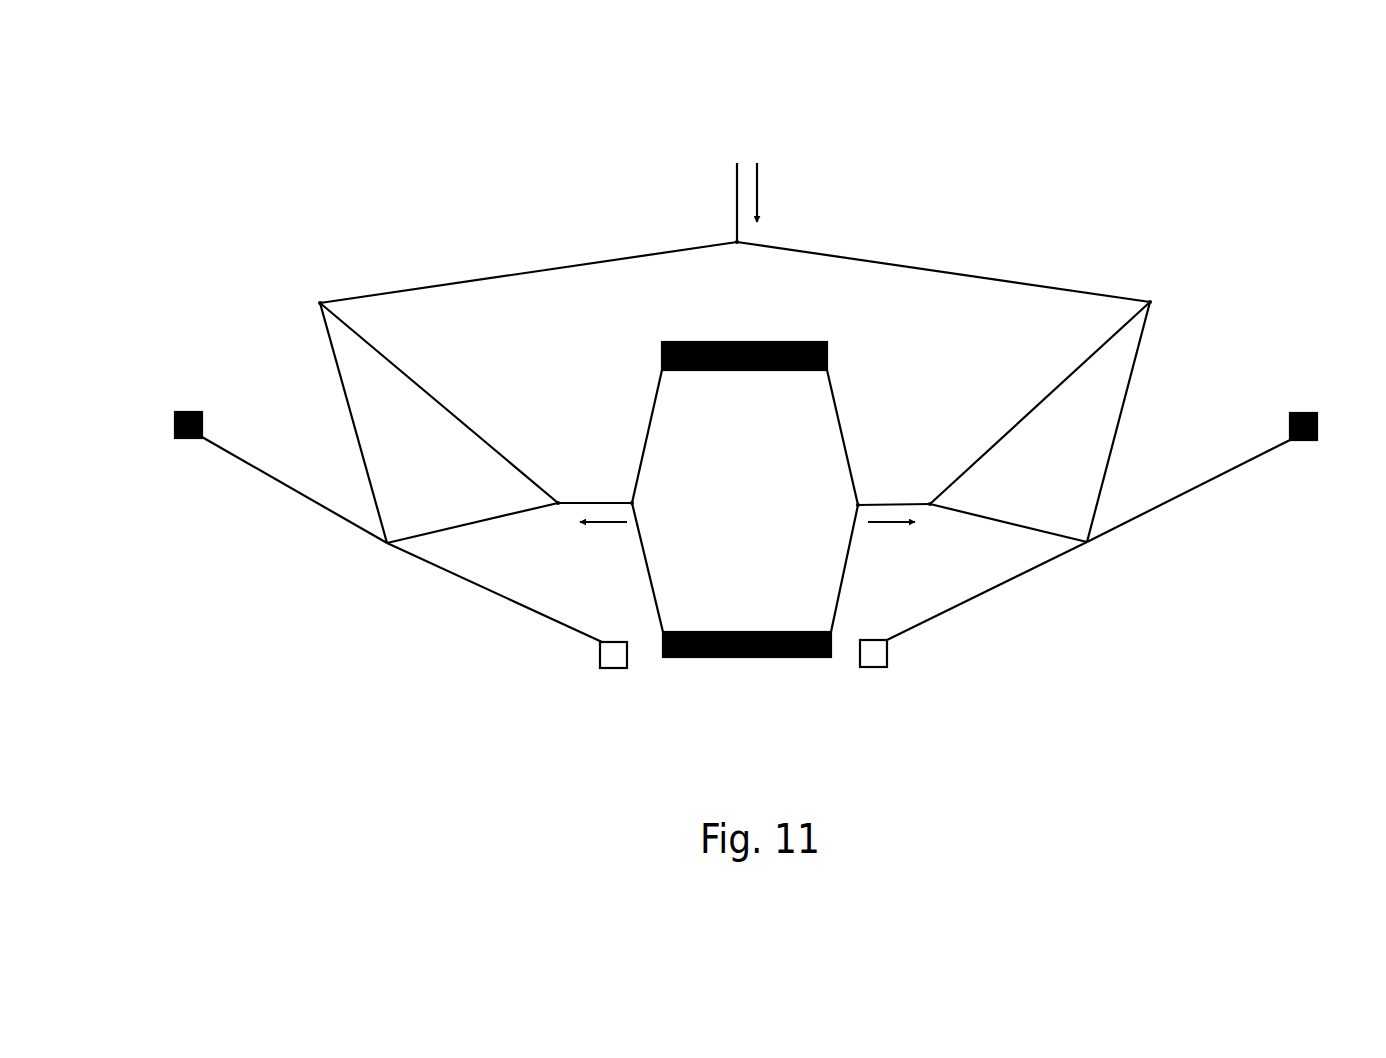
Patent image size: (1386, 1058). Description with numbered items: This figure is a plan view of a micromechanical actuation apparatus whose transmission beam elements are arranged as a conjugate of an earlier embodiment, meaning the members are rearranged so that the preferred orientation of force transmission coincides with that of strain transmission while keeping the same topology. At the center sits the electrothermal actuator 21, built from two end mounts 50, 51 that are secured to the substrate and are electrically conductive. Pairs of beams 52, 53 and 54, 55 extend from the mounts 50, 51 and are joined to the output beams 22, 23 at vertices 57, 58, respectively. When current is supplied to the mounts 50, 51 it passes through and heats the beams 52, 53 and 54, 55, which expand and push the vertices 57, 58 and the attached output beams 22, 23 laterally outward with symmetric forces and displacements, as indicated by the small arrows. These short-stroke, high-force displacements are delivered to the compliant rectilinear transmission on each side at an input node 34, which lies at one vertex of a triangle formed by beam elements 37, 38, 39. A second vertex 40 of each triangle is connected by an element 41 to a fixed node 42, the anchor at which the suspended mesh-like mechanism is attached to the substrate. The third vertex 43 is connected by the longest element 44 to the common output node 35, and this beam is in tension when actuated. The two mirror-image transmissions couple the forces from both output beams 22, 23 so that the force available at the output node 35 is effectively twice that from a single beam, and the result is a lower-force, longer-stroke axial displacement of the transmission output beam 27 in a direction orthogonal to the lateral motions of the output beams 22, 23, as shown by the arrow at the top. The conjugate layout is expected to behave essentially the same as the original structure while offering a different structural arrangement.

The actuator 21 is at (645, 651).
The output beam 22 is at (895, 502).
The output beam 23 is at (592, 502).
The transmission output beam 27 is at (733, 212).
The input node 34 is at (557, 508).
The output node 35 is at (737, 242).
The beam element 37 is at (443, 403).
The beam element 38 is at (348, 405).
The beam element 39 is at (457, 528).
The vertex 40 is at (383, 550).
The element 41 is at (245, 467).
The fixed node 42 is at (173, 432).
The vertex 43 is at (317, 301).
The element 44 is at (537, 270).
The end mount 50 is at (740, 340).
The end mount 51 is at (738, 658).
The beam 52 is at (840, 417).
The beam 53 is at (837, 587).
The beam 54 is at (652, 415).
The beam 55 is at (647, 565).
The vertex 57 is at (857, 505).
The vertex 58 is at (634, 502).